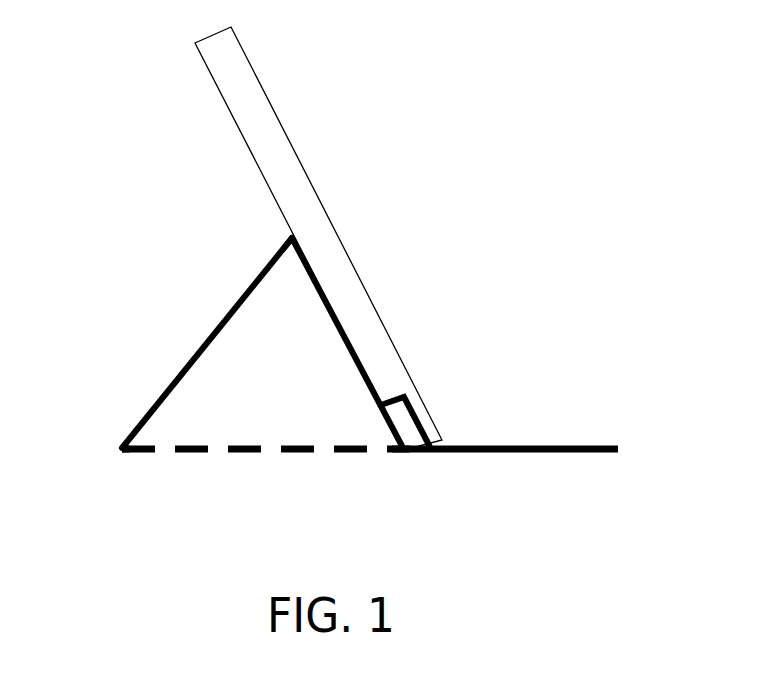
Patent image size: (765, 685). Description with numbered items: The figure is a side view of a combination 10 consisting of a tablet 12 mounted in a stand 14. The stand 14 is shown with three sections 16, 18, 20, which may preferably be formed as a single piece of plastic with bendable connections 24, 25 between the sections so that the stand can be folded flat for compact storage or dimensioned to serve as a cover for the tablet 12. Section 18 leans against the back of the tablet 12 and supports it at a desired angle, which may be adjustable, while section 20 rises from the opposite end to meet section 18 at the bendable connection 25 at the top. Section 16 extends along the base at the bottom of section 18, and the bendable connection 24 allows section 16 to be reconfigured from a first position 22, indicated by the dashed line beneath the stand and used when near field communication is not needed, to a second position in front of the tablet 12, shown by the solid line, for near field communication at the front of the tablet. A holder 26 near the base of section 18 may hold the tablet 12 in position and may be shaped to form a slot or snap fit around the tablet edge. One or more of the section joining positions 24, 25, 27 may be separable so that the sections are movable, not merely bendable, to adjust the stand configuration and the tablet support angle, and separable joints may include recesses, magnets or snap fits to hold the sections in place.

The combination 10 is at (541, 100).
The tablet 12 is at (270, 67).
The stand 14 is at (129, 378).
The section 16 is at (593, 455).
The section 18 is at (355, 363).
The section 20 is at (215, 320).
The first position 22 is at (227, 455).
The bendable connection 24 is at (397, 455).
The bendable connection 25 is at (290, 237).
The holder 26 is at (420, 411).
The section joining position 27 is at (122, 455).